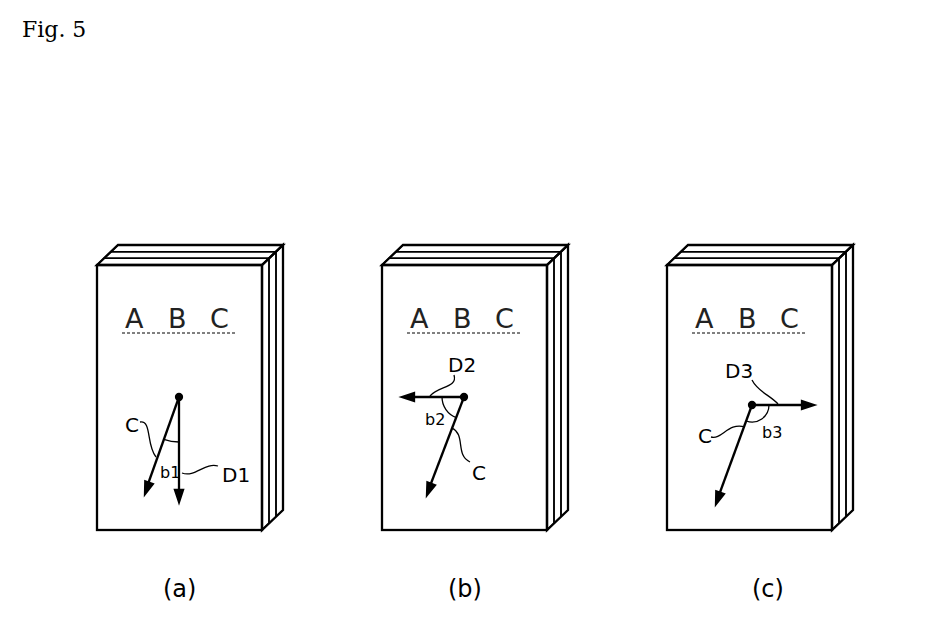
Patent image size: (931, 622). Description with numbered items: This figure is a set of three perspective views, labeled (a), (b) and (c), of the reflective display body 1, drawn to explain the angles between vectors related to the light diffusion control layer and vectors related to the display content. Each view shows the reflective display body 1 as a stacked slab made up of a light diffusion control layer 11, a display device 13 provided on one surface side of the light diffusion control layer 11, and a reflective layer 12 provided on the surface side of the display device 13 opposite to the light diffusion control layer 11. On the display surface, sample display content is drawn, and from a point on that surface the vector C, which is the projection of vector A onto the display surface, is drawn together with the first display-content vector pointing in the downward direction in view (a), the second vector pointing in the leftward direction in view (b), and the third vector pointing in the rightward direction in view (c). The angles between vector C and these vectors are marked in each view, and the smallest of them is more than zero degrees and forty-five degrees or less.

The reflective display body 1 is at (208, 239).
The light diffusion control layer 11 is at (102, 262).
The reflective layer 12 is at (117, 247).
The display device 13 is at (112, 253).